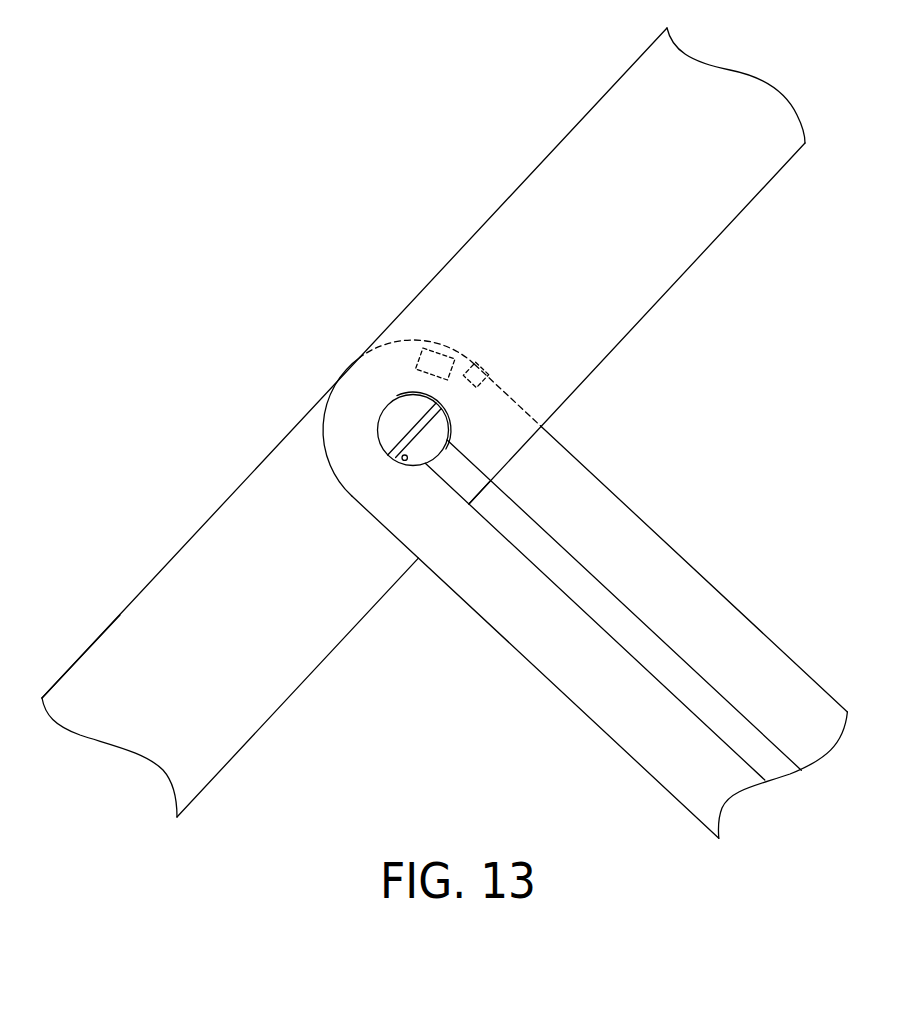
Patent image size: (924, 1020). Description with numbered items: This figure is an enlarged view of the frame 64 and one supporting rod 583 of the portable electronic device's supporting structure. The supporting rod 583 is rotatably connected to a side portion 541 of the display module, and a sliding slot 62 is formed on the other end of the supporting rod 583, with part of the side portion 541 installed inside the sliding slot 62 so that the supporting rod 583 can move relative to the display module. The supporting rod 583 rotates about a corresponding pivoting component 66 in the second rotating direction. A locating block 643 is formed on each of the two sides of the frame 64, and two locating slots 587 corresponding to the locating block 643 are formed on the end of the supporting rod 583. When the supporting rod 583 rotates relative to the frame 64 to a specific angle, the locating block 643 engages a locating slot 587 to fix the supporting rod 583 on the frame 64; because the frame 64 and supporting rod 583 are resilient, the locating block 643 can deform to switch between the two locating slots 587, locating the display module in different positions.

The sliding slot 62 is at (629, 623).
The frame 64 is at (740, 185).
The pivoting component 66 is at (393, 432).
The side portion 541 is at (303, 653).
The supporting rod 583 is at (607, 507).
The locating slot 587 is at (478, 364).
The locating block 643 is at (487, 372).